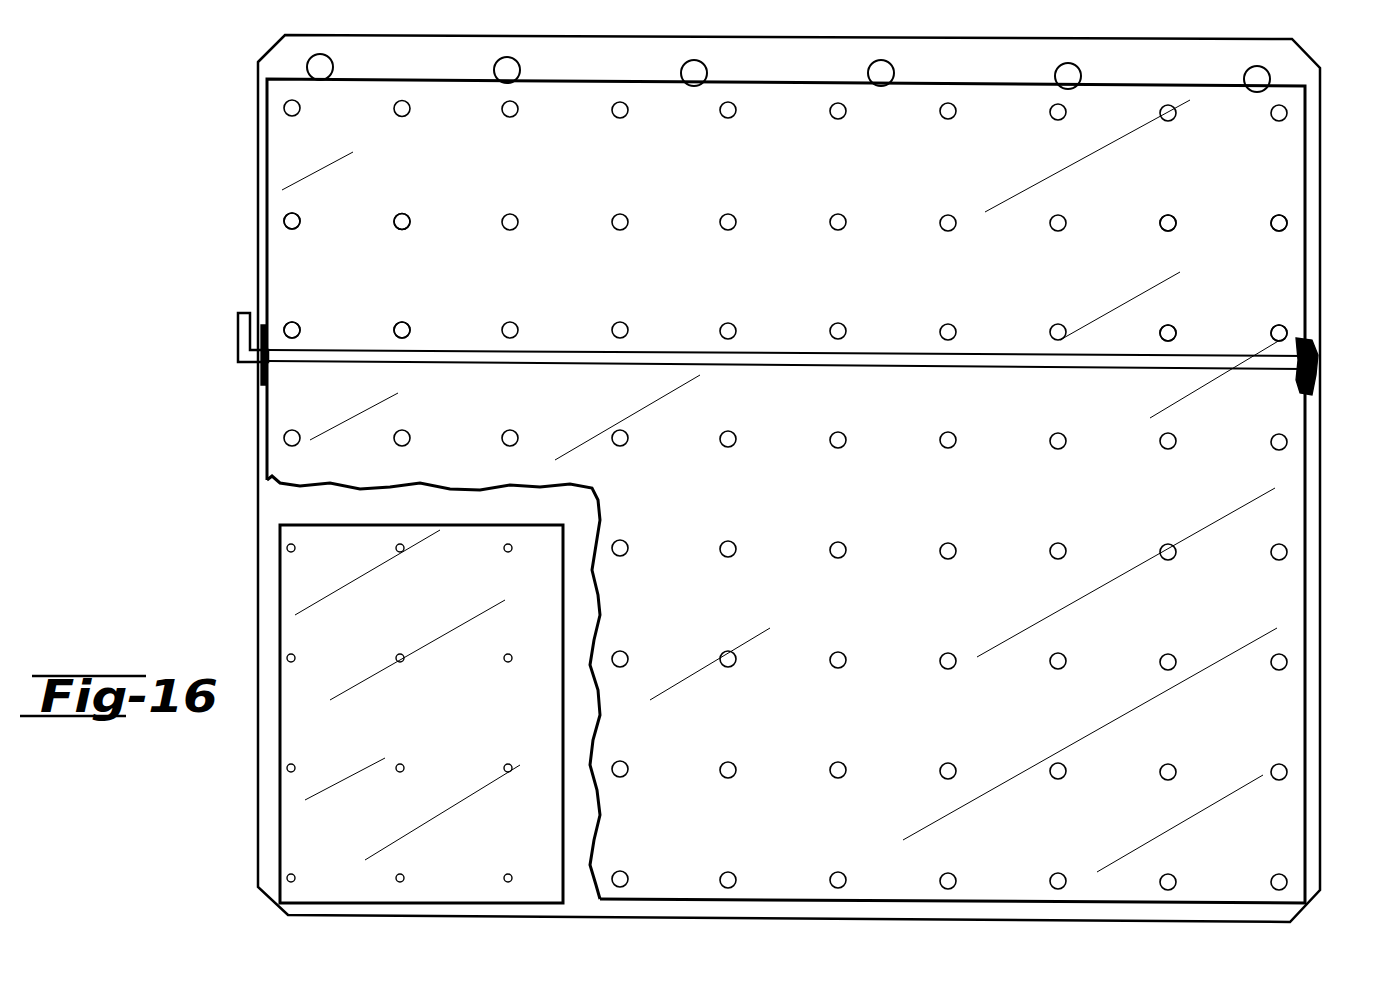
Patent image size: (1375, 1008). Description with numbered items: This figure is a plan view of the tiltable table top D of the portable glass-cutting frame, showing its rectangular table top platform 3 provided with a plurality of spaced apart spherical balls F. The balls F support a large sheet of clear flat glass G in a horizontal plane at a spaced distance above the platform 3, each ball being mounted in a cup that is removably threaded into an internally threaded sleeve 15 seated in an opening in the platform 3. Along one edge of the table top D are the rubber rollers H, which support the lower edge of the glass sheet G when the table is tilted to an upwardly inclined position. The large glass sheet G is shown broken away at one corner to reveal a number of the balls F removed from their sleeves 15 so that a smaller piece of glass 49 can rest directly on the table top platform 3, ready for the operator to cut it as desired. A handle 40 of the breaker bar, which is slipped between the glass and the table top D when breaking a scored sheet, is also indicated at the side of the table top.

The table top platform 3 is at (283, 505).
The internally threaded sleeve 15 is at (504, 549).
The handle 40 is at (238, 318).
The smaller piece of glass 49 is at (385, 714).
The tiltable table top D is at (257, 187).
The sheet of clear flat glass G is at (265, 230).
The rubber rollers H is at (327, 57).
The spherical balls F is at (397, 321).